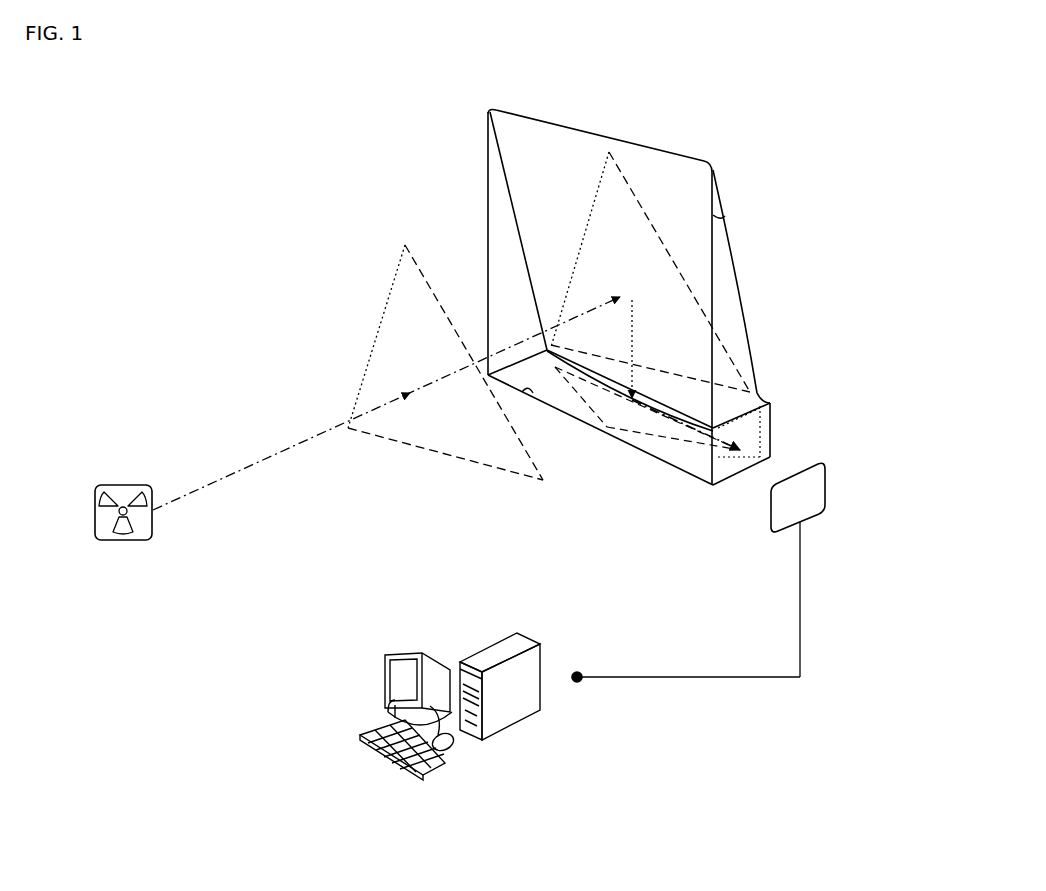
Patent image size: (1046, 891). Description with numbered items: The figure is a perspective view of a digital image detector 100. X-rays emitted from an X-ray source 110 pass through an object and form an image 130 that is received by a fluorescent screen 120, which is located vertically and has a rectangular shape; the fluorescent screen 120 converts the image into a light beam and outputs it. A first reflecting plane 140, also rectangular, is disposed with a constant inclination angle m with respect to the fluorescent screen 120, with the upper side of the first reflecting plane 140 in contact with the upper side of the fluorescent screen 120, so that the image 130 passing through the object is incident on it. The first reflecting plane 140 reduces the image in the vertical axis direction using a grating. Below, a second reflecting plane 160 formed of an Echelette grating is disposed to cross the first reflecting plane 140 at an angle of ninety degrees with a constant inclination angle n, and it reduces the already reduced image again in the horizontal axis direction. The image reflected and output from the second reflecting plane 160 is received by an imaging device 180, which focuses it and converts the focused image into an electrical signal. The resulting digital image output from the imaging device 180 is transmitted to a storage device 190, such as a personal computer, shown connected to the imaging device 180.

The digital image detector 100 is at (803, 141).
The X-ray source 110 is at (123, 488).
The fluorescent screen 120 is at (487, 192).
The image 130 is at (400, 305).
The first reflecting plane 140 is at (740, 288).
The second reflecting plane 160 is at (598, 430).
The imaging device 180 is at (772, 518).
The storage device 190 is at (512, 712).
The inclination angle m is at (726, 220).
The inclination angle n is at (528, 398).